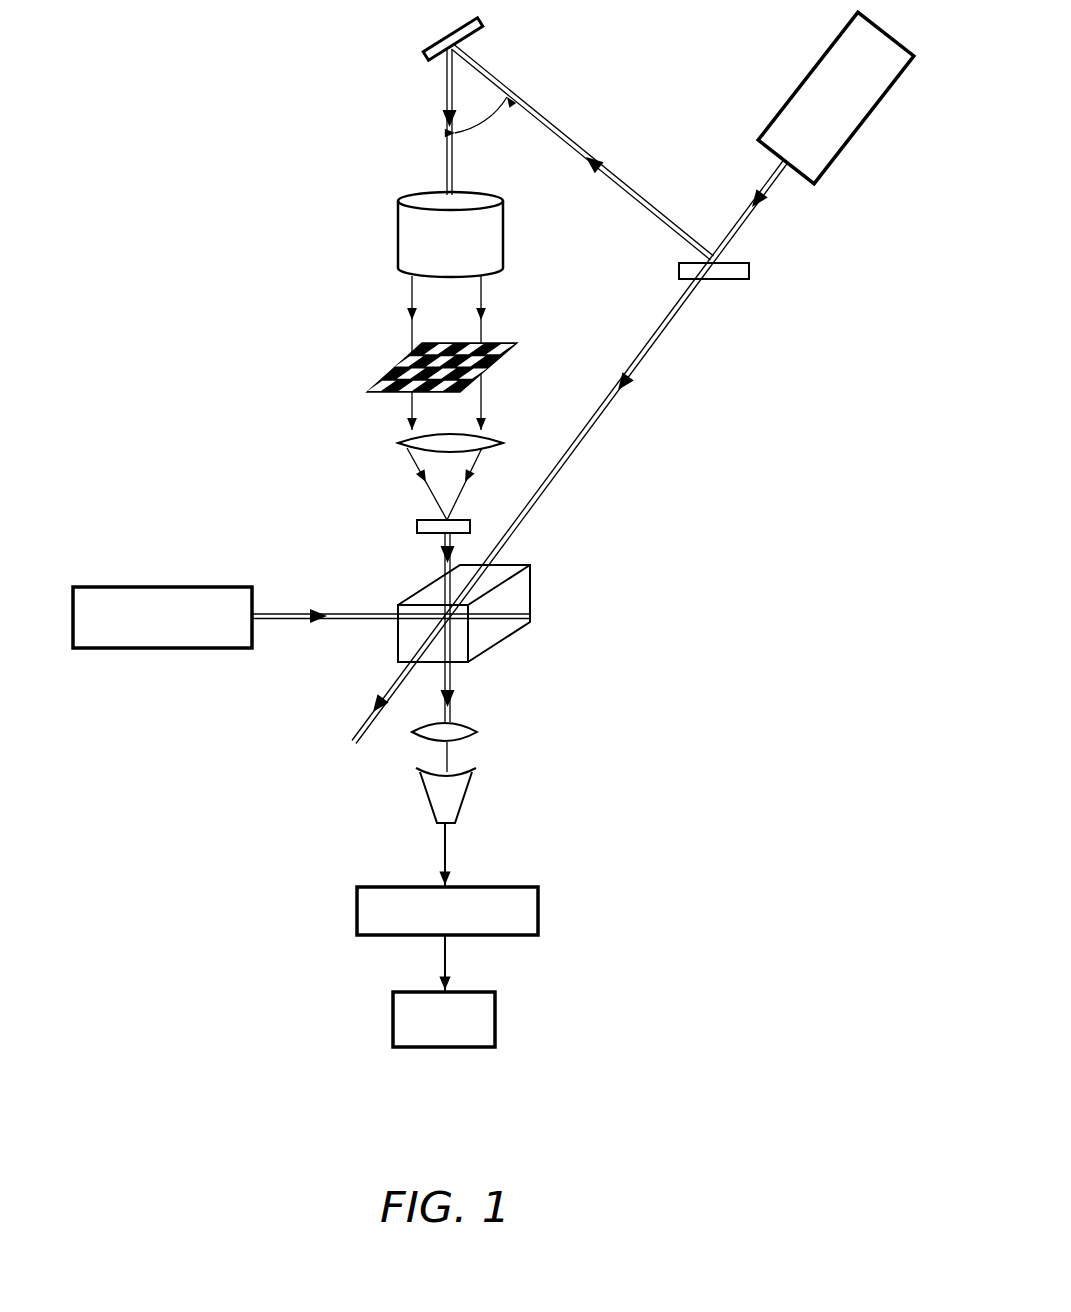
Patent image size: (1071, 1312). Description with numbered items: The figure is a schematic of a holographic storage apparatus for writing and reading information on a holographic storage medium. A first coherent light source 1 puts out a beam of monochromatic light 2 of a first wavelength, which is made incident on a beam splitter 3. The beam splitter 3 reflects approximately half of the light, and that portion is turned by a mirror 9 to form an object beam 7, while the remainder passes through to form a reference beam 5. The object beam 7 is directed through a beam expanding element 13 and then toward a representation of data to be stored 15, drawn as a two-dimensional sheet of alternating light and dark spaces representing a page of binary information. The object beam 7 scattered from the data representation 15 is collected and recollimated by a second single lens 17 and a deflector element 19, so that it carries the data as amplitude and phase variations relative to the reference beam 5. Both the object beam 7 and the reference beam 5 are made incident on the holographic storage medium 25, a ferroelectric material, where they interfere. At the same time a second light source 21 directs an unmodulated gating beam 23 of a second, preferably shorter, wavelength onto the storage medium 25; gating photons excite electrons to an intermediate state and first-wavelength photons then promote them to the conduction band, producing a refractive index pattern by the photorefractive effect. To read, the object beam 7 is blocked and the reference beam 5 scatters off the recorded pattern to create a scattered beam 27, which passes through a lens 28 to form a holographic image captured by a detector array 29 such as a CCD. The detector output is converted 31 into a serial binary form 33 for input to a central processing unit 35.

The first coherent light source 1 is at (840, 97).
The beam of monochromatic light 2 is at (770, 212).
The beam splitter 3 is at (818, 292).
The reference beam 5 is at (532, 503).
The object beam 7 is at (480, 122).
The mirror 9 is at (568, 130).
The beam expanding element 13 is at (403, 311).
The representation of data to be stored 15 is at (406, 393).
The second single lens 17 is at (413, 477).
The deflector element 19 is at (406, 519).
The second light source 21 is at (162, 597).
The gating beam 23 is at (391, 625).
The holographic storage medium 25 is at (576, 597).
The scattered beam 27 is at (499, 627).
The lens 28 is at (476, 724).
The detector array 29 is at (603, 804).
The converter 31 is at (485, 879).
The serial binary form 33 is at (568, 952).
The central processing unit 35 is at (406, 1019).